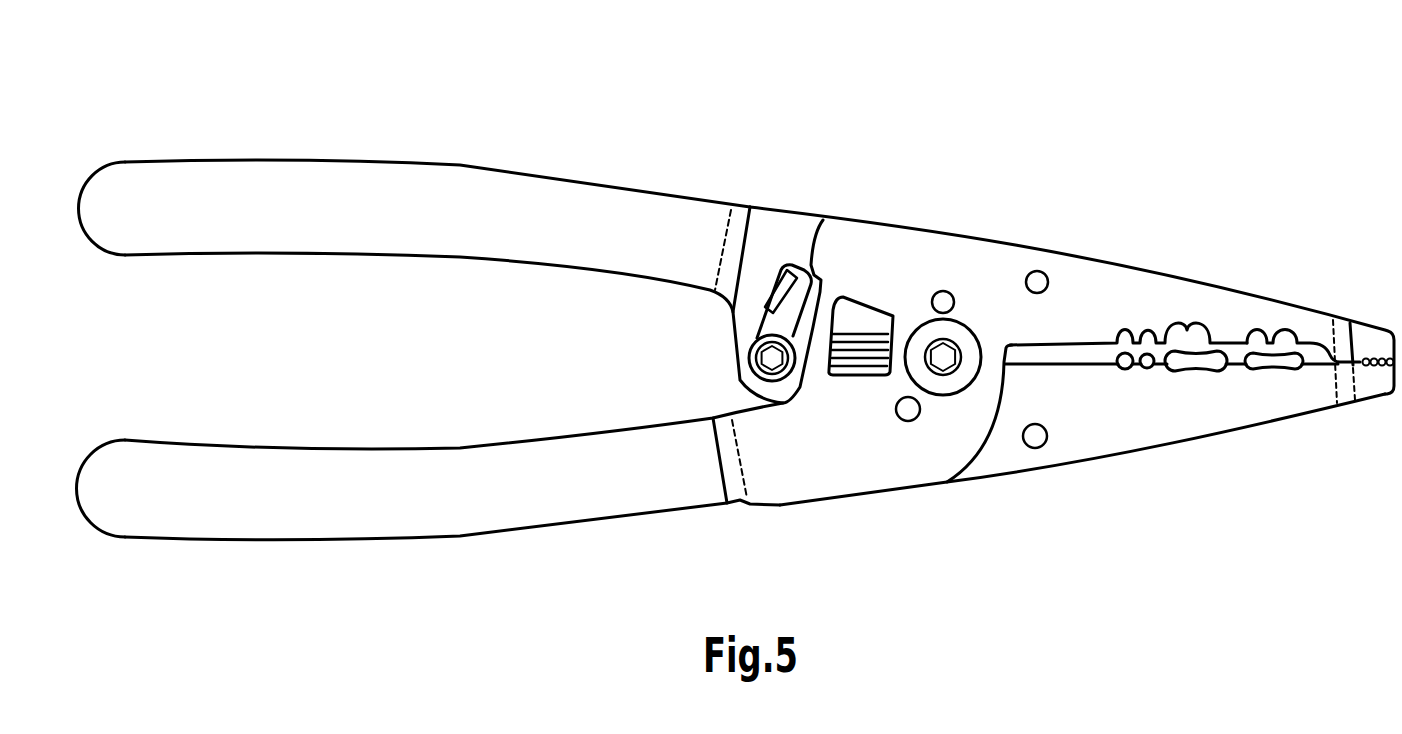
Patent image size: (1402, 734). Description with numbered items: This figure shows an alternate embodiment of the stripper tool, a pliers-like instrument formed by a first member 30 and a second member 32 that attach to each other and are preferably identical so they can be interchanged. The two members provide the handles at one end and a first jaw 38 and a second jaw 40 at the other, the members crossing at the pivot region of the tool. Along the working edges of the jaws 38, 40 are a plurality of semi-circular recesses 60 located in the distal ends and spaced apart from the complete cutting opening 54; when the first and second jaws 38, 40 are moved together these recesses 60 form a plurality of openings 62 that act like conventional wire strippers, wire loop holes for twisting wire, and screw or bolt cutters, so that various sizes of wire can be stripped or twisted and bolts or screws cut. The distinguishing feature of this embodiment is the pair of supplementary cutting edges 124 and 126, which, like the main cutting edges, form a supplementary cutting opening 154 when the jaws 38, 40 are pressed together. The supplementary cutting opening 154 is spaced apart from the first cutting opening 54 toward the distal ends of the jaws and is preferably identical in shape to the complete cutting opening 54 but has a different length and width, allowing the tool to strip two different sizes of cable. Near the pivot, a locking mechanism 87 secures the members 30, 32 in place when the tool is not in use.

The first member 30 is at (498, 170).
The second member 32 is at (562, 537).
The first jaw 38 is at (1022, 473).
The second jaw 40 is at (1022, 240).
The complete cutting opening 54 is at (1213, 352).
The recesses 60 is at (1112, 333).
The openings 62 is at (1122, 366).
The locking mechanism 87 is at (763, 333).
The supplementary cutting edge 124 is at (1290, 340).
The supplementary cutting edge 126 is at (1290, 372).
The supplementary cutting opening 154 is at (1298, 350).